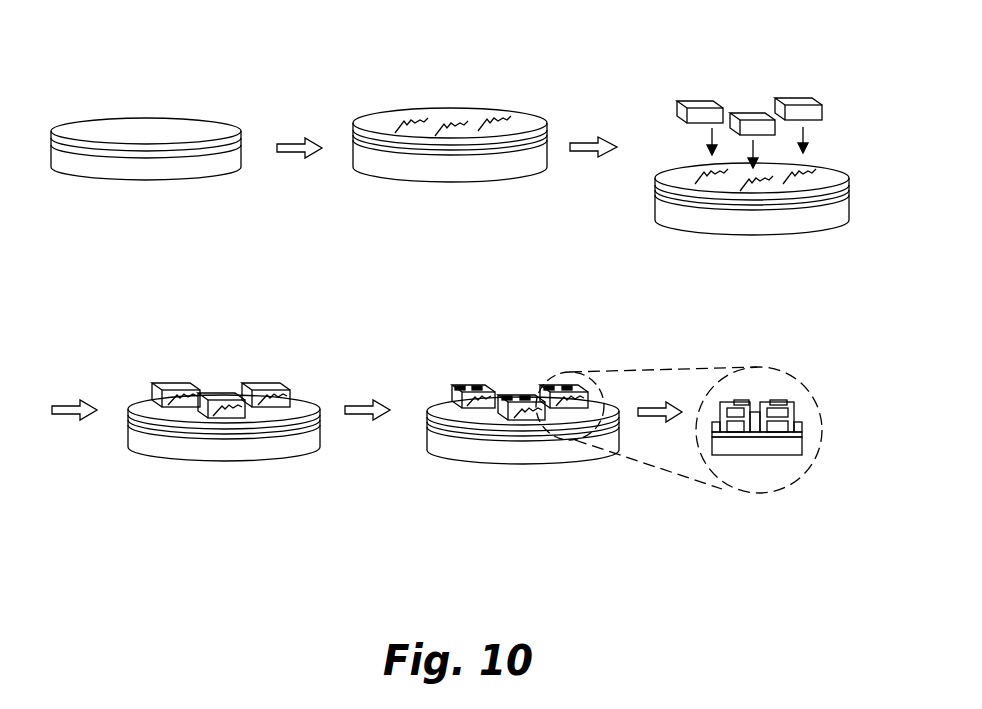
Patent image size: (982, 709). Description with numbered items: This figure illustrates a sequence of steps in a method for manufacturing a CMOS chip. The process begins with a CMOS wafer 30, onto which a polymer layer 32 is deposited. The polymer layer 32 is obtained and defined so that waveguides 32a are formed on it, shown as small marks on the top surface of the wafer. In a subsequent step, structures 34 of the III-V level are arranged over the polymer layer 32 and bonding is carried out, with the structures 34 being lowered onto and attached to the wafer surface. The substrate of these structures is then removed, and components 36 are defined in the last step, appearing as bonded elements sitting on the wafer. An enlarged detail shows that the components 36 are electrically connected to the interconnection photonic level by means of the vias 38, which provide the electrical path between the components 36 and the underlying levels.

The CMOS wafer 30 is at (145, 118).
The polymer layer 32 is at (530, 118).
The waveguides 32a is at (487, 115).
The structures of the III-V level 34 is at (797, 103).
The components 36 is at (503, 385).
The vias 38 is at (780, 400).